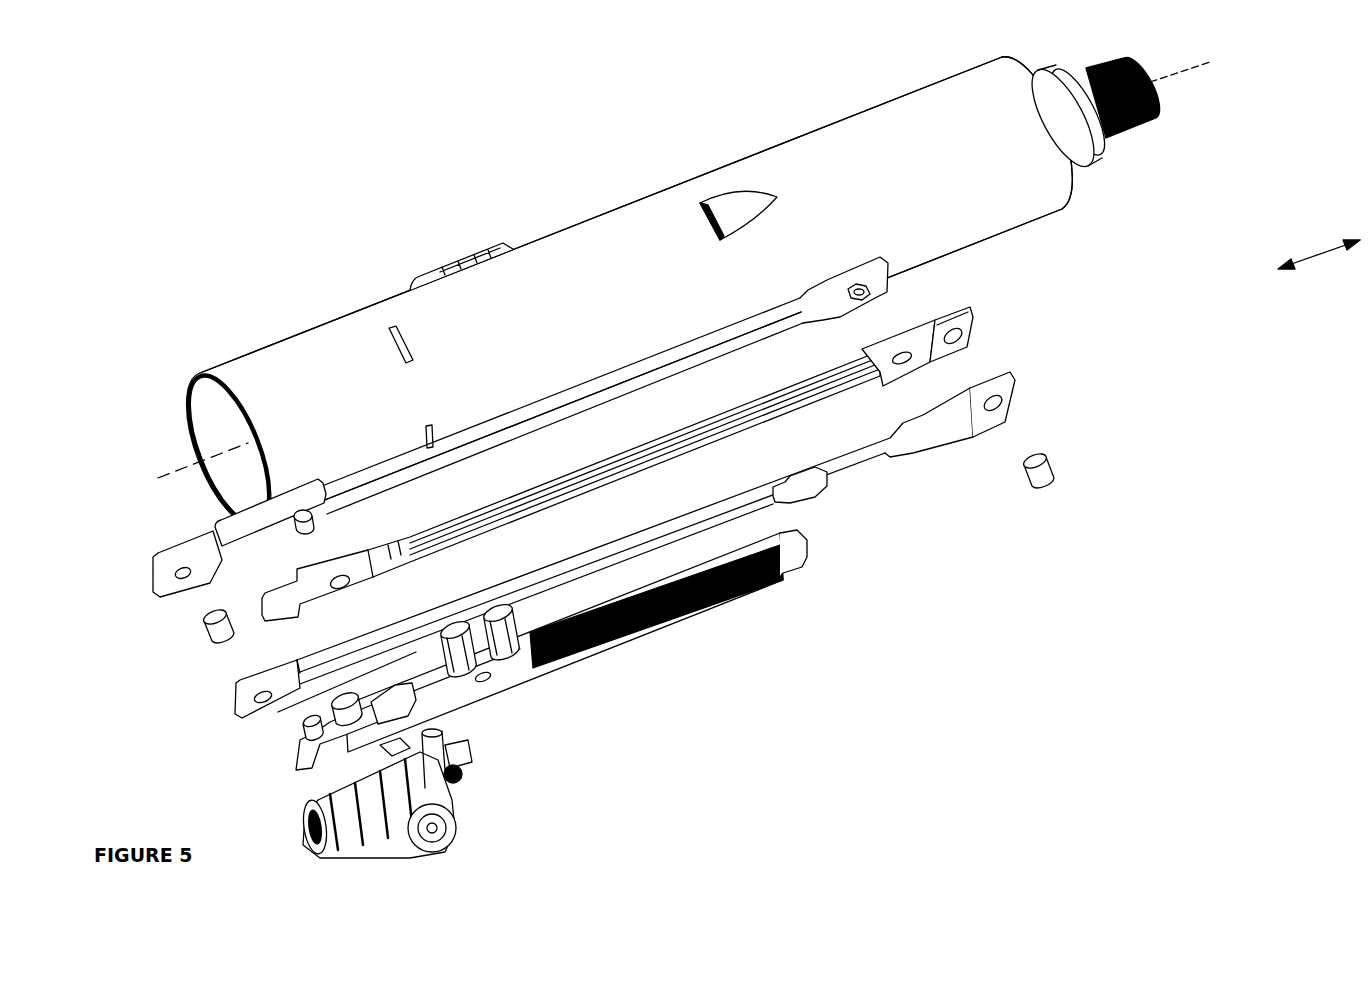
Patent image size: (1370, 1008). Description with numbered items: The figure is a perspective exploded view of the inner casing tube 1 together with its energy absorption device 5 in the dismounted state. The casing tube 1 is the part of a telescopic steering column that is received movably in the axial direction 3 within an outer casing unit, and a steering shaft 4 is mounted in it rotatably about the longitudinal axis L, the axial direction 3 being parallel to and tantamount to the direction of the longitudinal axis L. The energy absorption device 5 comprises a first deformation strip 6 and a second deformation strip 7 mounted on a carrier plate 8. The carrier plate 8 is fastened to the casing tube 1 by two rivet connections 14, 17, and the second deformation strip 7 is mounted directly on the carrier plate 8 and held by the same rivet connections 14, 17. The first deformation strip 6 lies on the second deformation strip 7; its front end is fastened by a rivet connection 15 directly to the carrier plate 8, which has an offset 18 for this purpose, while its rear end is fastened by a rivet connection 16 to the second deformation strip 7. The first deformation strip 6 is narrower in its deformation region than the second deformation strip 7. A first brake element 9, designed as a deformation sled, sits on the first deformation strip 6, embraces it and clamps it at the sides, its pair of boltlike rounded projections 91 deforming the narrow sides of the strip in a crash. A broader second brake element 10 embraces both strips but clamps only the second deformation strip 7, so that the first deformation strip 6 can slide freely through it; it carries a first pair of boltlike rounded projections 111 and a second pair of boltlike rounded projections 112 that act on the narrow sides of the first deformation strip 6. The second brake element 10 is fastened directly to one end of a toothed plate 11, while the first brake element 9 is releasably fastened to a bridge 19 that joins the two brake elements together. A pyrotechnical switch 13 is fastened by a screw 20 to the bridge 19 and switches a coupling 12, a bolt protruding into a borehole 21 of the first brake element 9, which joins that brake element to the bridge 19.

The inner casing tube 1 is at (995, 203).
The axial direction 3 is at (1322, 256).
The steering shaft 4 is at (1072, 137).
The energy absorption device 5 is at (876, 622).
The first deformation strip 6 is at (853, 463).
The second deformation strip 7 is at (642, 458).
The carrier plate 8 is at (570, 400).
The first brake element 9 is at (300, 743).
The second brake element 10 is at (564, 671).
The toothed plate 11 is at (757, 590).
The coupling 12 is at (383, 753).
The pyrotechnical switch 13 is at (437, 799).
The rivet connection 14 is at (300, 510).
The rivet connection 15 is at (203, 624).
The rivet connection 16 is at (1062, 468).
The rivet connection 17 is at (963, 267).
The offset 18 is at (200, 548).
The bridge 19 is at (437, 697).
The screw 20 is at (467, 780).
The borehole 21 is at (350, 743).
The boltlike rounded projections 91 is at (235, 716).
The first pair of boltlike rounded projections 111 is at (520, 667).
The second pair of boltlike rounded projections 112 is at (490, 680).
The longitudinal axis L is at (1212, 62).